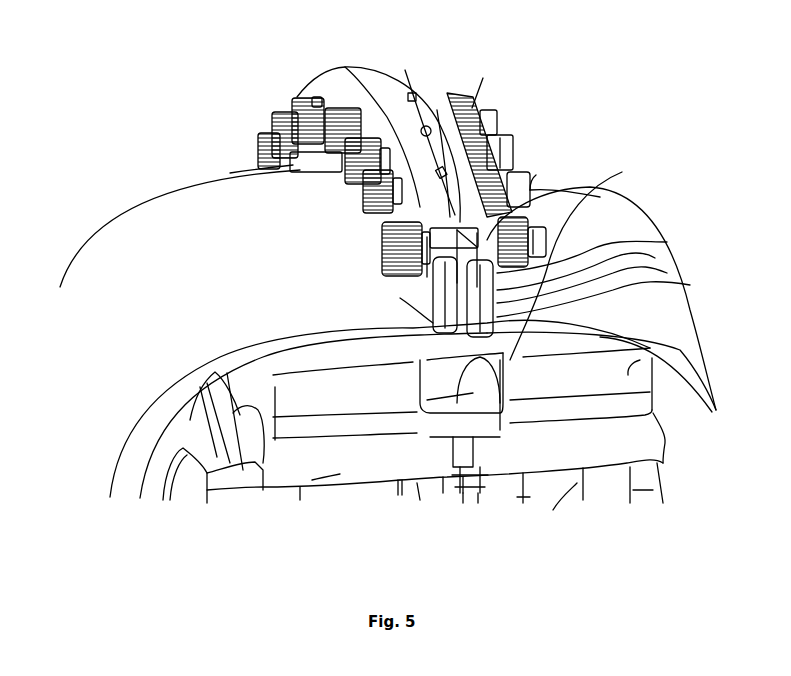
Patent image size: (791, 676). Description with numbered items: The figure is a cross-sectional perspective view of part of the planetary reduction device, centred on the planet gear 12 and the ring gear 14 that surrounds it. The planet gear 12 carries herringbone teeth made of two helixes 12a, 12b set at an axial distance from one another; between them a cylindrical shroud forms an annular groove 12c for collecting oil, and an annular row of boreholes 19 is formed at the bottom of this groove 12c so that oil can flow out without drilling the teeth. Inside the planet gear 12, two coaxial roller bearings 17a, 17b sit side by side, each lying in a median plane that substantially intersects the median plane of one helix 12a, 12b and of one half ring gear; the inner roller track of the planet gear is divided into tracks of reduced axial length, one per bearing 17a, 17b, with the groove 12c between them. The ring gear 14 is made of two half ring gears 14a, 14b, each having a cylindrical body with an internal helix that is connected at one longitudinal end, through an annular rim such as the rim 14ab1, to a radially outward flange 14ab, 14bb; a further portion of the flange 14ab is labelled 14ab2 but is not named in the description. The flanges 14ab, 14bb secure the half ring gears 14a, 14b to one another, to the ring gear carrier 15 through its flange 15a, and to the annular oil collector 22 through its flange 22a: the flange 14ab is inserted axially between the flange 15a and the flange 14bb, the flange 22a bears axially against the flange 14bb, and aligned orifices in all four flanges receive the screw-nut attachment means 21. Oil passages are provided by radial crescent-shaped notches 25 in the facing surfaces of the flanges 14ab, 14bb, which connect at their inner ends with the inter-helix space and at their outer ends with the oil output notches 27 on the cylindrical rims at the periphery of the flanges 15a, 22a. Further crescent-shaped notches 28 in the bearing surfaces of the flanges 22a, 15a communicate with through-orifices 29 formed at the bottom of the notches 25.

The annular flange of the ring gear carrier 15a is at (361, 78).
The notches for the output of oil 27 is at (412, 95).
The flange of the oil collector 22a is at (463, 105).
The attachment means 21 is at (514, 170).
The annular flange of the half ring gear 14bb is at (530, 183).
The crescent-shaped notches 28 is at (622, 172).
The oil collector 22 is at (613, 240).
The through-orifices 29 is at (667, 242).
The cable 14ab2 is at (667, 273).
The half ring gear 14b is at (695, 343).
The annular flange of the half ring gear 14ab is at (382, 230).
The crescent-shaped notches 25 is at (410, 300).
The annular rim 14ab1 is at (380, 343).
The ring gear carrier 15 is at (303, 392).
The housing 14 is at (271, 403).
The half ring gear 14a is at (247, 350).
The planet gear 12 is at (501, 420).
The helix of the herringbone teeth 12b is at (659, 443).
The helix of the herringbone teeth 12a is at (313, 485).
The bearing 17a is at (370, 493).
The annular groove 12c is at (437, 477).
The boreholes 19 is at (490, 477).
The bearing 17b is at (553, 510).